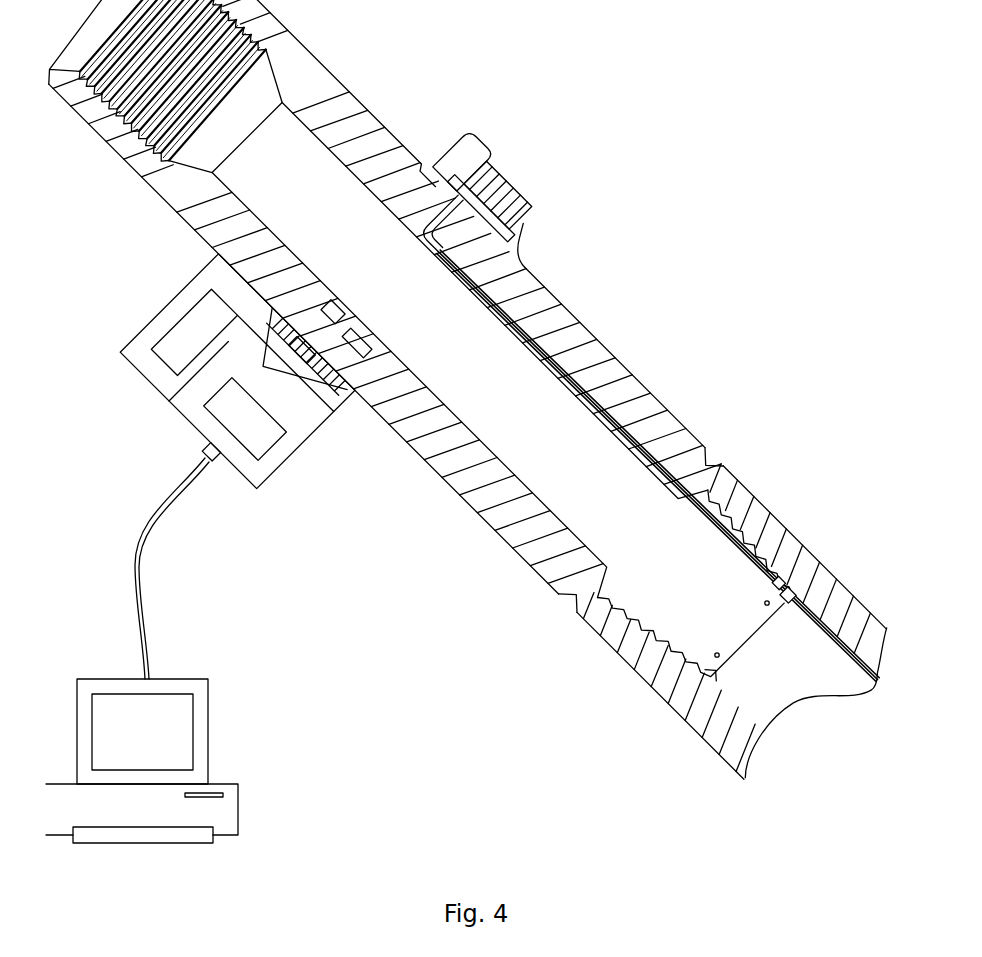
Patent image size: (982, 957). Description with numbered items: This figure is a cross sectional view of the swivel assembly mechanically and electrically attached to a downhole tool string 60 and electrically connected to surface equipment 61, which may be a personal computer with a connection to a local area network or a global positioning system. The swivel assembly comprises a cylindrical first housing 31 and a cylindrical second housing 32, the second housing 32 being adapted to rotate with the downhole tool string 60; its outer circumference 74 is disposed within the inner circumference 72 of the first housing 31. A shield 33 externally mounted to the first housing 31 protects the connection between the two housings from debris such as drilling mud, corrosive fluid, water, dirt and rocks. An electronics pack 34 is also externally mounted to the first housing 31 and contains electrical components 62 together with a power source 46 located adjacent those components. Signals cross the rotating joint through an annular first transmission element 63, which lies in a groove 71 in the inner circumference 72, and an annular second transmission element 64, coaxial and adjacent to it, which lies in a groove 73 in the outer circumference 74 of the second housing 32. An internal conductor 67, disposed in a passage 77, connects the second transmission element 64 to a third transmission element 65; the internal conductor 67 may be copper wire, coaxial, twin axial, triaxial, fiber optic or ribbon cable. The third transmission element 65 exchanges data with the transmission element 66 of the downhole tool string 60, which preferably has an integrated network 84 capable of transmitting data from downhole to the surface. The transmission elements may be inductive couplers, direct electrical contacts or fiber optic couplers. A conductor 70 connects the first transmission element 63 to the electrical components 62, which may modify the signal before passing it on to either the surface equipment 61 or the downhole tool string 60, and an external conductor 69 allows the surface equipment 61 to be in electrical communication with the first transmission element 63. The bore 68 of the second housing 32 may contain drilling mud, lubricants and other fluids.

The first housing 31 is at (507, 196).
The second housing 32 is at (568, 323).
The shield 33 is at (466, 158).
The electronics pack 34 is at (190, 395).
The power source 46 is at (178, 322).
The downhole tool string 60 is at (798, 558).
The surface equipment 61 is at (131, 746).
The electrical components 62 is at (283, 445).
The first transmission element 63 is at (500, 216).
The second transmission element 64 is at (493, 236).
The third transmission element 65 is at (768, 583).
The transmission element 66 is at (781, 606).
The internal conductor 67 is at (650, 460).
The bore 68 is at (611, 526).
The external conductor 69 is at (150, 622).
The conductor 70 is at (340, 308).
The groove 71 is at (330, 420).
The inner circumference 72 is at (365, 358).
The groove 73 is at (360, 345).
The outer circumference 74 is at (452, 480).
The passage 77 is at (588, 395).
The integrated network 84 is at (840, 602).